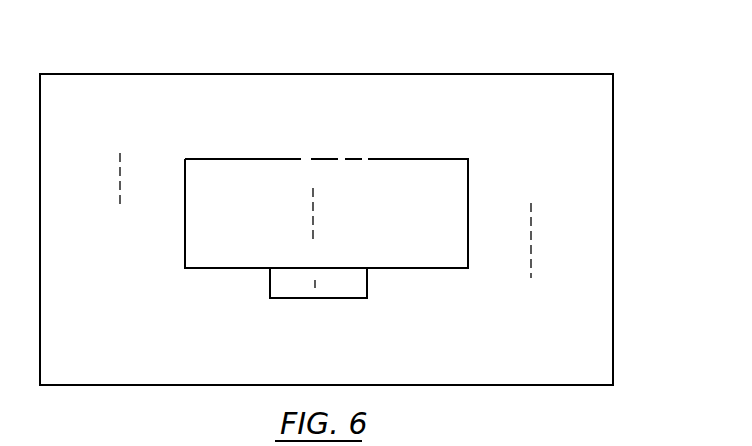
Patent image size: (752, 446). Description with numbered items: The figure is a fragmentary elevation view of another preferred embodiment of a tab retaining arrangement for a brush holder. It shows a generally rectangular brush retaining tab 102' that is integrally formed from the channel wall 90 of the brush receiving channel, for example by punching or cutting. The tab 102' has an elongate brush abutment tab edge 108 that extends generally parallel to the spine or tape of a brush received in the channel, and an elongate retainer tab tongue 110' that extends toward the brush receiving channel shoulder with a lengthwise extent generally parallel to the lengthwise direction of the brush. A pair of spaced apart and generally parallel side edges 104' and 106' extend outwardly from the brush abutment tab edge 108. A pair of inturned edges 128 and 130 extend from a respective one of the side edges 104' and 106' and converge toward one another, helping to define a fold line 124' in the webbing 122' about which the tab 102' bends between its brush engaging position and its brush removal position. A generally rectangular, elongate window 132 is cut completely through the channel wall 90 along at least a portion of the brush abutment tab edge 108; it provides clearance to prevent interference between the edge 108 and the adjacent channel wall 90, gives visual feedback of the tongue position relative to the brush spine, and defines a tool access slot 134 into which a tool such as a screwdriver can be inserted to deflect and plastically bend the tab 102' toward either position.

The channel wall 90 is at (605, 138).
The brush retaining tab 102' is at (312, 249).
The side edge 104' is at (136, 209).
The side edge 106' is at (513, 217).
The brush abutment tab edge 108 is at (443, 270).
The retainer tab tongue 110' is at (405, 294).
The webbing 122' is at (365, 158).
The fold line 124' is at (322, 129).
The inturned edge 128 is at (218, 159).
The inturned edge 130 is at (432, 159).
The window 132 is at (345, 303).
The tool access slot 134 is at (292, 290).